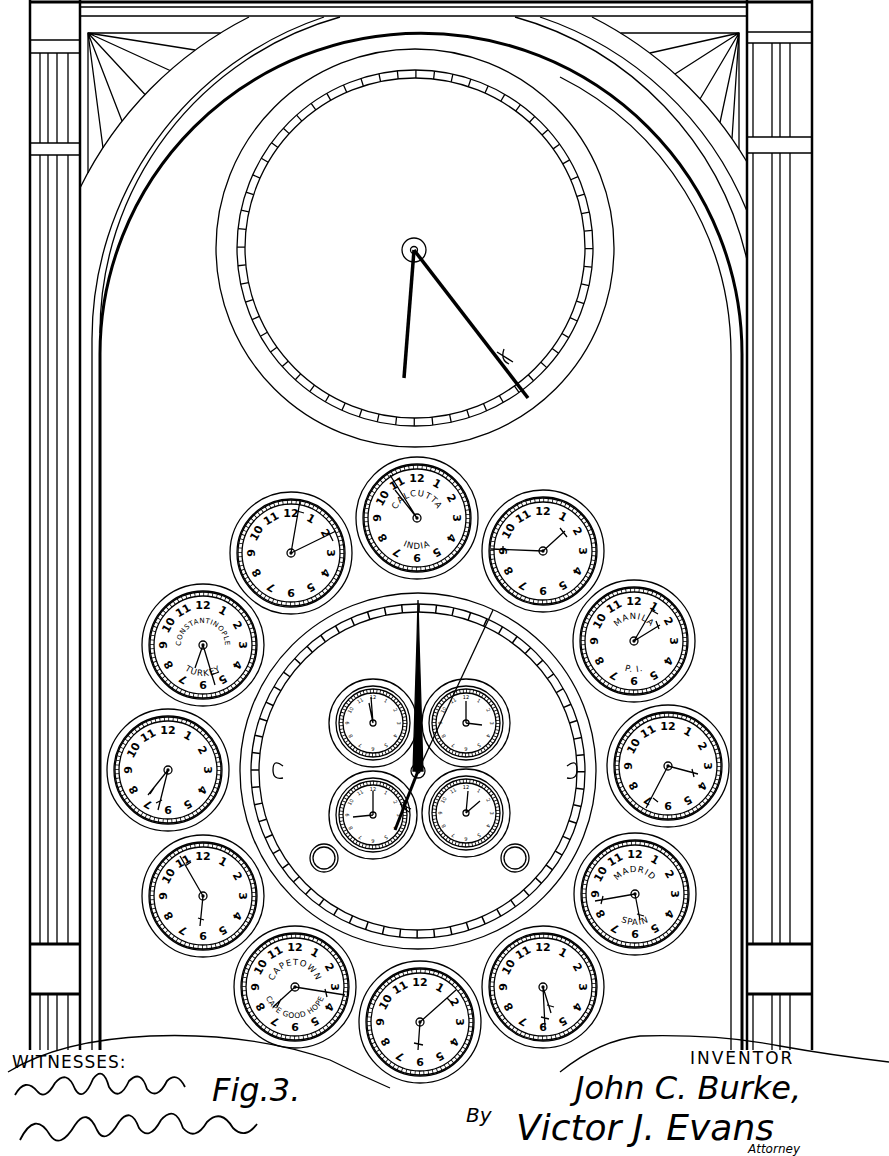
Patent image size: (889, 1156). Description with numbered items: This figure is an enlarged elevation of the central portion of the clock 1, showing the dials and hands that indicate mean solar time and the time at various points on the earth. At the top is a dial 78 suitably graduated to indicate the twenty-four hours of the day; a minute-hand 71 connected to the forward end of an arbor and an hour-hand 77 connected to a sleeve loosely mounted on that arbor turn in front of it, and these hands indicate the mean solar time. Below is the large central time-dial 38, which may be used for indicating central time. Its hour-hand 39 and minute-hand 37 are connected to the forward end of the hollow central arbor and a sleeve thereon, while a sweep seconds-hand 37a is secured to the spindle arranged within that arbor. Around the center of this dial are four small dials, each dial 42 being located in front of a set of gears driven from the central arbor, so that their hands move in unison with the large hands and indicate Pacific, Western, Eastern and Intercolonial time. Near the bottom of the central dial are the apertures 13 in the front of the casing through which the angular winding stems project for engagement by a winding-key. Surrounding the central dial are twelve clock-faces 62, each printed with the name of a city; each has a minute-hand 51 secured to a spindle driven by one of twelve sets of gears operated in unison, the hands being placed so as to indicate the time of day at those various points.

The clock case 1 is at (421, 525).
The apertures 13 is at (338, 864).
The minute-hand 37 is at (424, 652).
The sweep seconds-hand 37a is at (496, 612).
The central time-dial 38 is at (592, 727).
The hour-hand 39 is at (402, 836).
The dial 42 is at (485, 700).
The minute-hand 51 is at (313, 497).
The clock-face 62 is at (690, 814).
The minute-hand 71 is at (468, 306).
The hour-hand 77 is at (409, 284).
The dial 78 is at (612, 280).